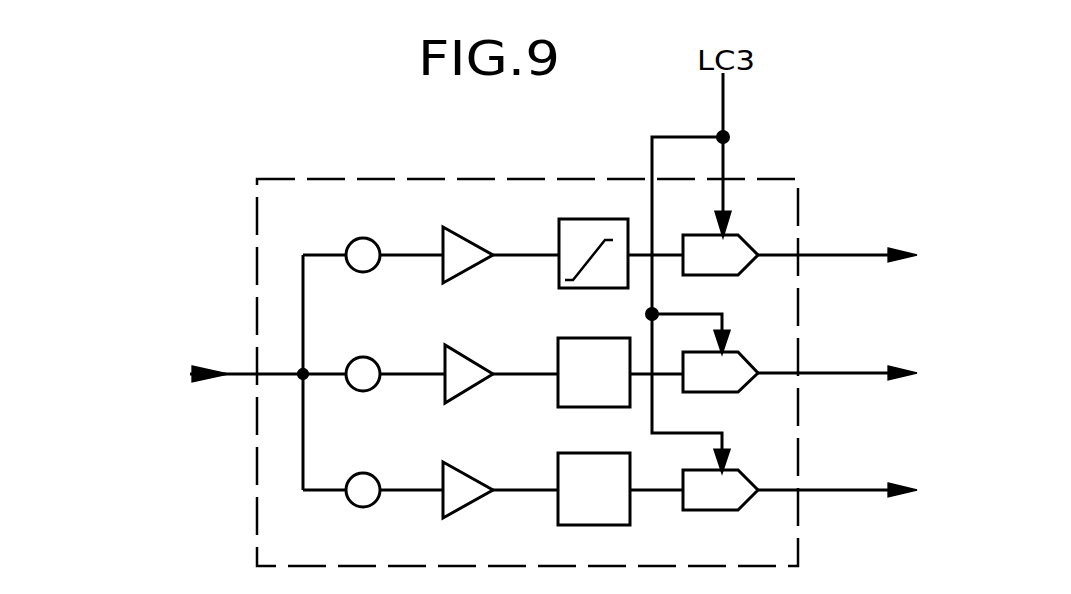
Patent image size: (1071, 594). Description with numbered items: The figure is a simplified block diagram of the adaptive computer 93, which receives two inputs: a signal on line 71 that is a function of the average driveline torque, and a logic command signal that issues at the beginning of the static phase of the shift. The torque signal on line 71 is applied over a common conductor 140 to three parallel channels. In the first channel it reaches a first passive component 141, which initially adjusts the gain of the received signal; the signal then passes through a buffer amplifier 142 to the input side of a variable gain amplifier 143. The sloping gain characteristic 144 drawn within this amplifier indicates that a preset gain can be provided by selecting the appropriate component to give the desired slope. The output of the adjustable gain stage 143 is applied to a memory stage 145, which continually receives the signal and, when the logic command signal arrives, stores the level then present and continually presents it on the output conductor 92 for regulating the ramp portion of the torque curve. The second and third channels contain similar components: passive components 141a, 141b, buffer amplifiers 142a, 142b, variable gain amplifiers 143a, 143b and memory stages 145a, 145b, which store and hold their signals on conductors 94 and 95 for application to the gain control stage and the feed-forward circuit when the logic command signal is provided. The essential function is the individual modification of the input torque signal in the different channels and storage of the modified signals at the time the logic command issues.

The adaptive computer 93 is at (638, 173).
The line 71 is at (232, 372).
The common conductor 140 is at (303, 307).
The first passive component 141 is at (392, 241).
The passive component 141a is at (389, 360).
The passive component 141b is at (388, 473).
The buffer amplifier 142 is at (499, 241).
The buffer amplifier 142a is at (501, 362).
The buffer amplifier 142b is at (500, 479).
The variable gain amplifier 143 is at (621, 238).
The variable gain amplifier 143a is at (620, 357).
The variable gain amplifier 143b is at (620, 475).
The sloping gain characteristic 144 is at (596, 244).
The memory stage 145 is at (720, 269).
The memory stage 145a is at (720, 387).
The memory stage 145b is at (720, 505).
The output conductor 92 is at (852, 253).
The conductor 94 is at (855, 371).
The conductor 95 is at (847, 488).